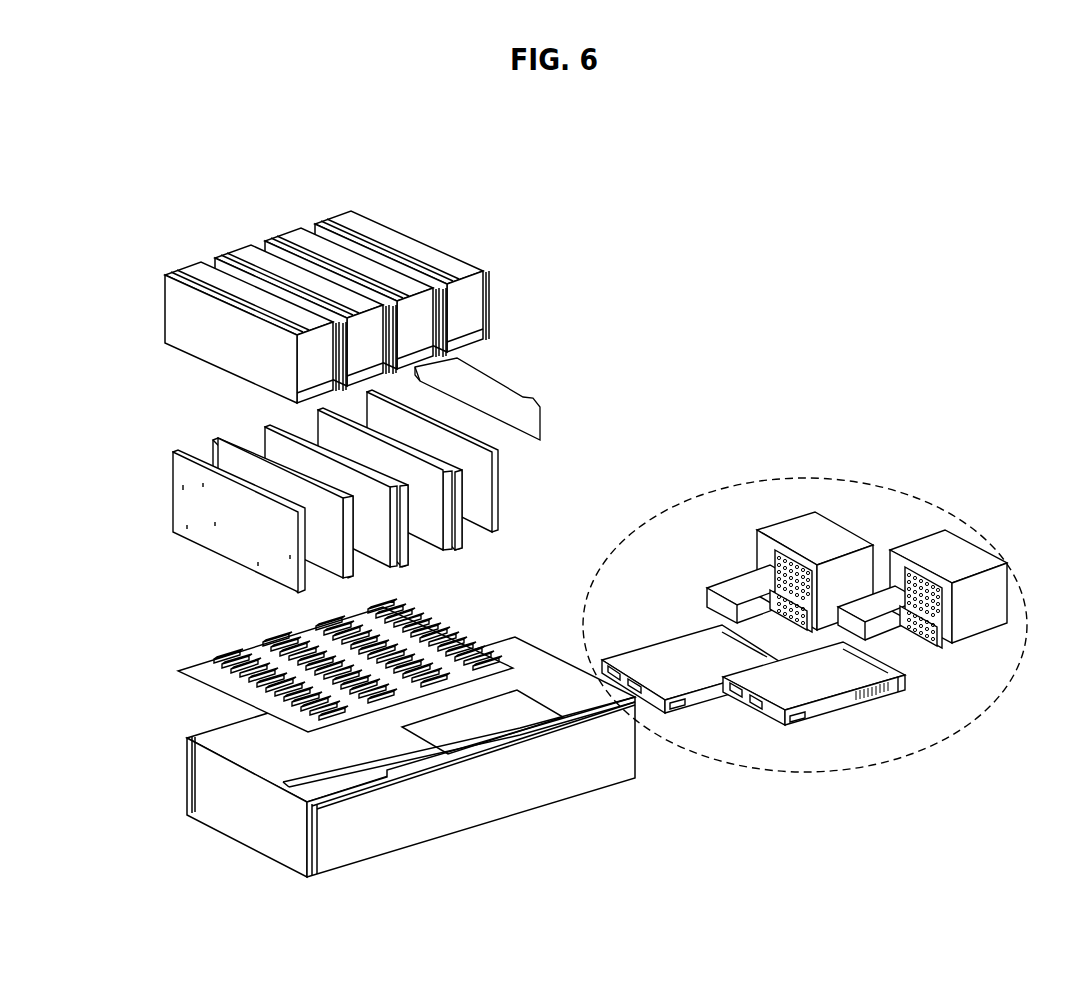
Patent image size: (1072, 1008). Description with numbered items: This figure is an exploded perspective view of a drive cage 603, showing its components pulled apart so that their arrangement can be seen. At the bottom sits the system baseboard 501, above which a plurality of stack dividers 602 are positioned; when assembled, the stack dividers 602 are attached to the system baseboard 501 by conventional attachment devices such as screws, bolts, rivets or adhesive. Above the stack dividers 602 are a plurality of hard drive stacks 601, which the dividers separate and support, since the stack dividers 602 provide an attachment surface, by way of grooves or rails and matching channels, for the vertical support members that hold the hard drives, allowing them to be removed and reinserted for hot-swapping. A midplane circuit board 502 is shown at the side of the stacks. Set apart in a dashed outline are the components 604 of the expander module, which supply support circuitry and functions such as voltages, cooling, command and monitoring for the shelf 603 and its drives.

The system baseboard 501 is at (187, 678).
The midplane circuit board 502 is at (523, 397).
The hard drive stacks 601 is at (343, 223).
The stack dividers 602 is at (303, 593).
The drive cage 603 is at (573, 790).
The components of the expander module 604 is at (782, 478).